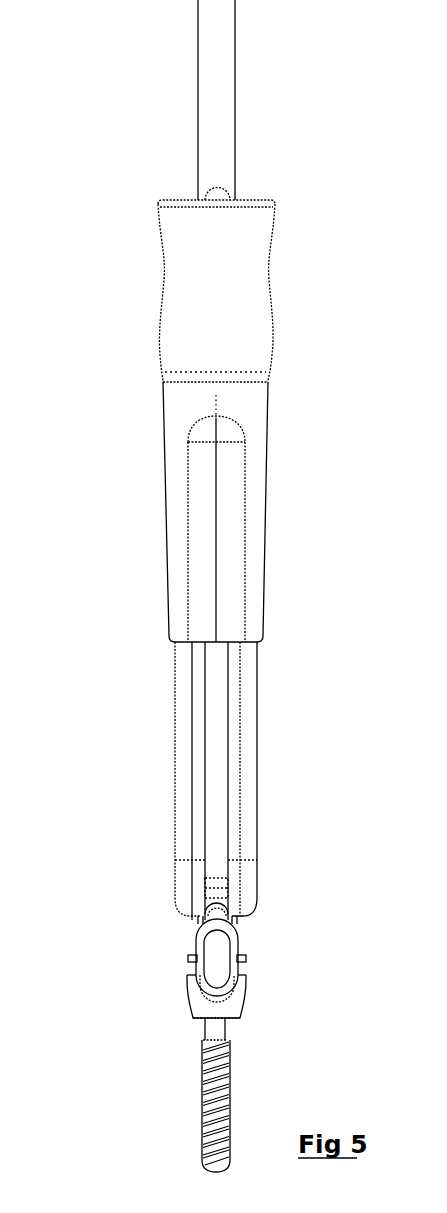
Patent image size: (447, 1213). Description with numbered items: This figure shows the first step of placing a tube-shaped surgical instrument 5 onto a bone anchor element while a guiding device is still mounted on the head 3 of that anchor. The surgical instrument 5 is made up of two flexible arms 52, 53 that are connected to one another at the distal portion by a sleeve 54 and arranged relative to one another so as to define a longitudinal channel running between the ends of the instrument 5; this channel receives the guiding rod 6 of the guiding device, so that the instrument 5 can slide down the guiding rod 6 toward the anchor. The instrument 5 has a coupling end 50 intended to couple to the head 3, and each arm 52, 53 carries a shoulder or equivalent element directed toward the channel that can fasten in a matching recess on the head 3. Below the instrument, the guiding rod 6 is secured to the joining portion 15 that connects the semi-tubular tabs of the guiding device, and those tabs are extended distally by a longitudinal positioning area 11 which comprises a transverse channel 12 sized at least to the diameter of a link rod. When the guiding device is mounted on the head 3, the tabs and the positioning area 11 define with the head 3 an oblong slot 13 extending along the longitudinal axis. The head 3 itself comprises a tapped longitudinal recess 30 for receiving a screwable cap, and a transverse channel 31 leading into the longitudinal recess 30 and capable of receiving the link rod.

The surgical instrument 5 is at (93, 552).
The sleeve 54 is at (265, 558).
The guiding rod 6 is at (215, 713).
The first flexible arm 52 is at (193, 757).
The second flexible arm 53 is at (245, 787).
The joining portion 15 is at (215, 902).
The coupling end 50 is at (172, 913).
The longitudinal positioning area 11 is at (193, 940).
The transverse channel 12 is at (215, 932).
The tapped longitudinal recess 30 is at (215, 958).
The transverse channel 31 is at (215, 977).
The oblong slot 13 is at (288, 905).
The head 3 is at (225, 1010).